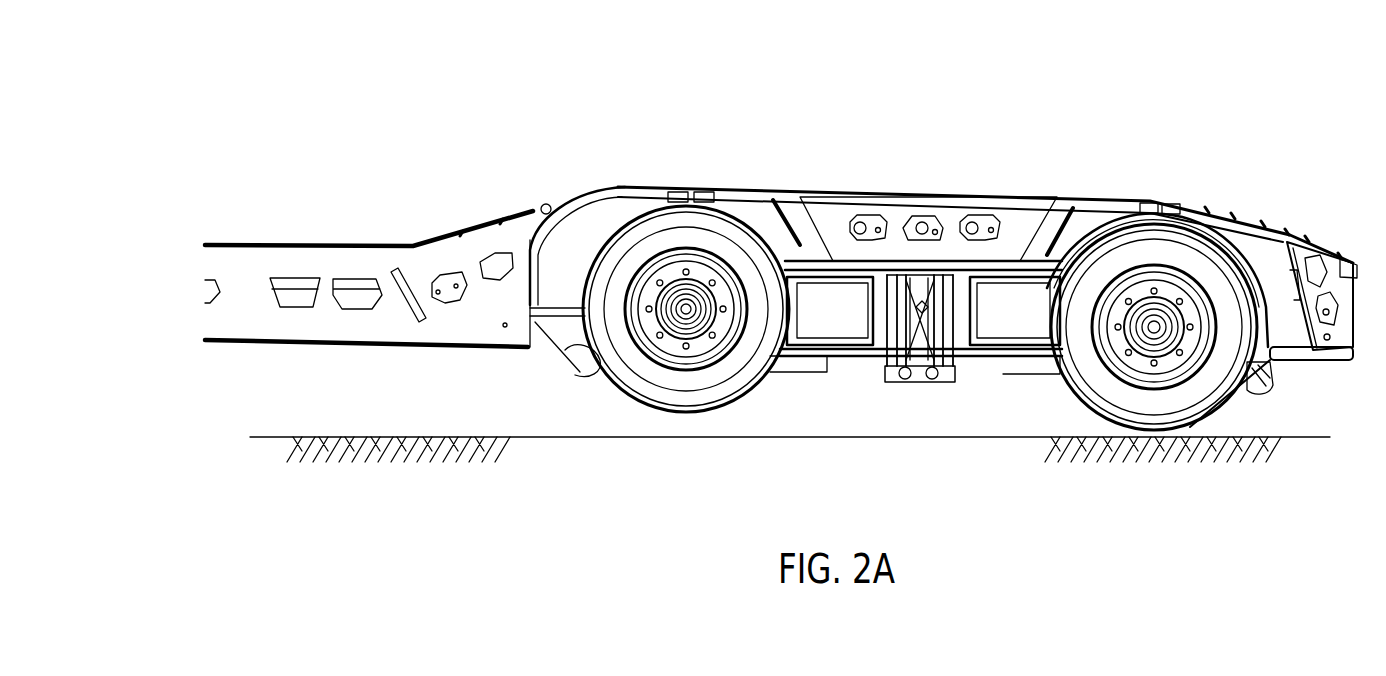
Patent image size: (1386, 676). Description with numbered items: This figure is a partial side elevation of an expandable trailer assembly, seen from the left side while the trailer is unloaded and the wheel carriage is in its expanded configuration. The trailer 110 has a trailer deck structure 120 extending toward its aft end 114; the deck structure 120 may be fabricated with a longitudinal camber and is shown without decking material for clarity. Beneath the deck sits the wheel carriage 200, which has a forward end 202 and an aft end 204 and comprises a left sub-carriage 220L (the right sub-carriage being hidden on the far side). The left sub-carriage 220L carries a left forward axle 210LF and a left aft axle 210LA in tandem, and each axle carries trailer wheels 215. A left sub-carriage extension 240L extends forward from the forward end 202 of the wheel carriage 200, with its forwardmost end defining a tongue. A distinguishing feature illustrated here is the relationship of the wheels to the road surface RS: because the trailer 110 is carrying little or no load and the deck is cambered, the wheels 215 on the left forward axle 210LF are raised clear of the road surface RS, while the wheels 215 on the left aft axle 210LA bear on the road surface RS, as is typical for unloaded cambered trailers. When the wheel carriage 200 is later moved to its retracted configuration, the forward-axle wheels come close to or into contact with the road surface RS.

The trailer 110 is at (402, 225).
The aft end 114 is at (493, 193).
The trailer deck structure 120 is at (258, 243).
The left sub-carriage extension 240L is at (357, 298).
The road surface RS is at (412, 436).
The wheel carriage 200 is at (928, 263).
The forward end 202 is at (593, 183).
The aft end 204 is at (1335, 233).
The trailer wheels 215 is at (735, 235).
The left forward axle 210LF is at (648, 350).
The left aft axle 210LA is at (1100, 340).
The left sub-carriage 220L is at (858, 372).